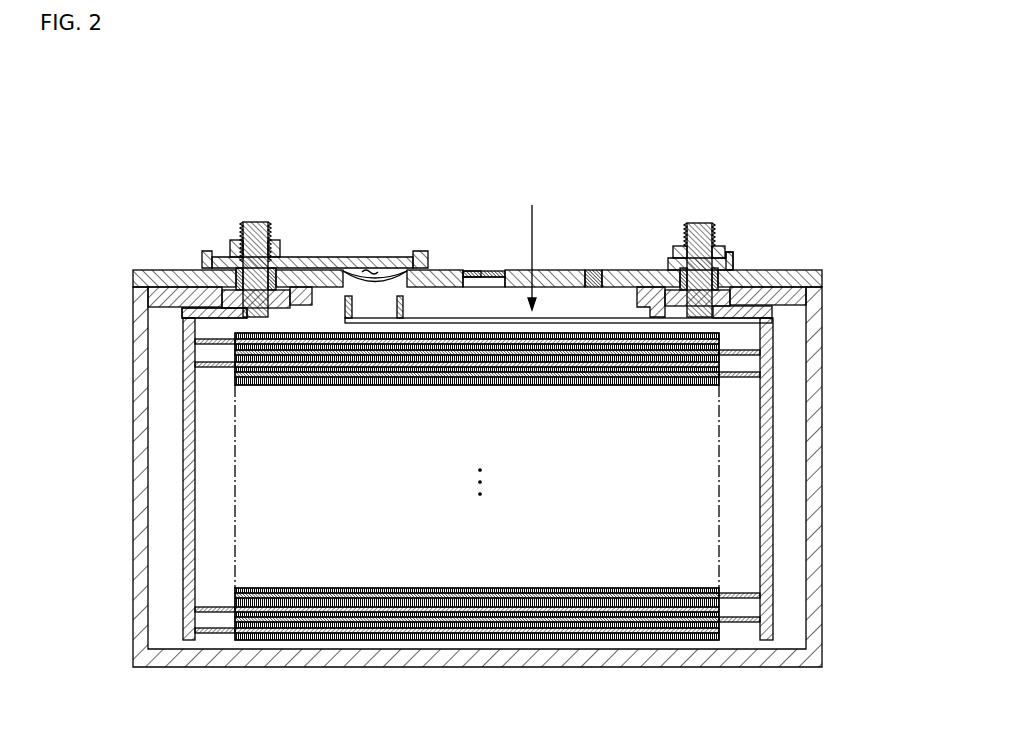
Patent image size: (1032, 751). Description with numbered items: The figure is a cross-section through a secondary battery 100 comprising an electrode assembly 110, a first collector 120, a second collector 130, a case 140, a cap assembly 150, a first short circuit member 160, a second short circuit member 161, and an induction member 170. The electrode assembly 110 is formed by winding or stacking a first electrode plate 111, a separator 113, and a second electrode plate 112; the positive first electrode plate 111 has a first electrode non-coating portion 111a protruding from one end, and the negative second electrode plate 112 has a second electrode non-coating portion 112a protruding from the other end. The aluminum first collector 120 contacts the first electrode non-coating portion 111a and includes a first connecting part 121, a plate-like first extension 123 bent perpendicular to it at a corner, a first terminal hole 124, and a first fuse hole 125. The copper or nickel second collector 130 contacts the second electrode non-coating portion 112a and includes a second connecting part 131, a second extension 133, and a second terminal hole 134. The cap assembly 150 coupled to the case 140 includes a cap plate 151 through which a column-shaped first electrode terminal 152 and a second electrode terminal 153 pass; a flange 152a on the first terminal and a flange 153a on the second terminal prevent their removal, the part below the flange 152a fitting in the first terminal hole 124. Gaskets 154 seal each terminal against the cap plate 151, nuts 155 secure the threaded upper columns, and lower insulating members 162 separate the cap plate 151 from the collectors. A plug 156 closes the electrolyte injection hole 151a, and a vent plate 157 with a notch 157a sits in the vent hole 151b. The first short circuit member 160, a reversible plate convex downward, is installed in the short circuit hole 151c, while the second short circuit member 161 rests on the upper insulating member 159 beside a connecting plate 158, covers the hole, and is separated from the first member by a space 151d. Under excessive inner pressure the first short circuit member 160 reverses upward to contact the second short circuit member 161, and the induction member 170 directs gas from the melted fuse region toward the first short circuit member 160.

The secondary battery 100 is at (786, 139).
The electrode assembly 110 is at (477, 530).
The first electrode plate 111 is at (642, 640).
The first electrode non-coating portion 111a is at (742, 624).
The second electrode plate 112 is at (352, 640).
The second electrode non-coating portion 112a is at (220, 632).
The separator 113 is at (495, 622).
The first collector 120 is at (782, 424).
The first connecting part 121 is at (733, 303).
The first extension 123 is at (772, 500).
The first terminal hole 124 is at (715, 322).
The first fuse hole 125 is at (782, 300).
The second collector 130 is at (155, 420).
The second connecting part 131 is at (212, 312).
The second extension 133 is at (186, 508).
The second terminal hole 134 is at (247, 321).
The case 140 is at (815, 372).
The cap assembly 150 is at (478, 223).
The cap plate 151 is at (546, 272).
The electrolyte injection hole 151a is at (558, 309).
The vent hole 151b is at (473, 290).
The short circuit hole 151c is at (399, 288).
The space 151d is at (368, 270).
The first electrode terminal 152 is at (700, 223).
The flange 152a is at (678, 288).
The second electrode terminal 153 is at (258, 222).
The flange of the second electrode terminal 153a is at (282, 294).
The gasket 154 is at (210, 256).
The nut 155 is at (275, 240).
The plug 156 is at (592, 271).
The vent plate 157 is at (503, 271).
The notch 157a is at (475, 271).
The connecting plate 158 is at (729, 256).
The upper insulating member 159 is at (418, 252).
The first short circuit member 160 is at (378, 277).
The second short circuit member 161 is at (330, 258).
The lower insulating member 162 is at (155, 300).
The induction member 170 is at (529, 248).